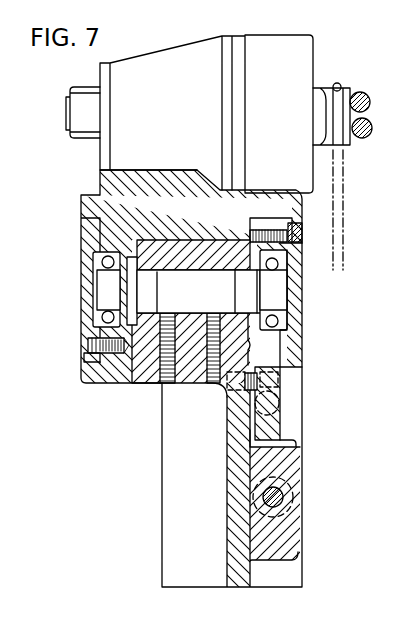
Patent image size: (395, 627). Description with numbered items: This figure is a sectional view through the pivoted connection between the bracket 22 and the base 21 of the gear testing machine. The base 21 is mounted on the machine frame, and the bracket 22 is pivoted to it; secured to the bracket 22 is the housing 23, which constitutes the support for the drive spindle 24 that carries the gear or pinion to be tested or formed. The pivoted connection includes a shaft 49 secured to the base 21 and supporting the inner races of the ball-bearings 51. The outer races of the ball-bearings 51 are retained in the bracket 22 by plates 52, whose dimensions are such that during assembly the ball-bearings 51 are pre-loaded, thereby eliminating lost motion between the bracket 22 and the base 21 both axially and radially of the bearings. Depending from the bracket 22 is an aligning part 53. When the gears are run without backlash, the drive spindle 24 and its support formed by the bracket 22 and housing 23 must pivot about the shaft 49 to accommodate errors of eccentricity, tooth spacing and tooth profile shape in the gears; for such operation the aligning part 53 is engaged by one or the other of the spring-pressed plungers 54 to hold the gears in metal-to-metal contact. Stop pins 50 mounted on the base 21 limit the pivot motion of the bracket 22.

The base 21 is at (140, 382).
The bracket 22 is at (84, 199).
The housing 23 is at (200, 56).
The drive spindle 24 is at (78, 133).
The shaft 49 is at (280, 293).
The stop pins 50 is at (228, 393).
The ball-bearings 51 is at (104, 318).
The plates 52 is at (81, 330).
The aligning part 53 is at (282, 380).
The spring-pressed plungers 54 is at (285, 405).